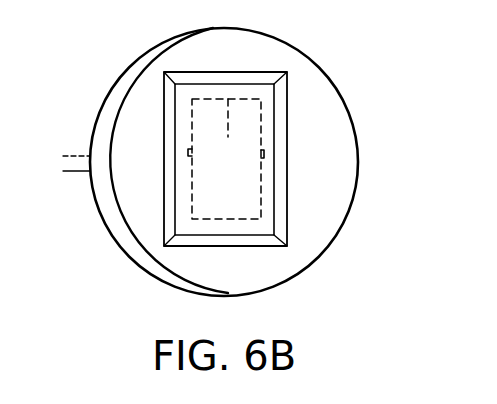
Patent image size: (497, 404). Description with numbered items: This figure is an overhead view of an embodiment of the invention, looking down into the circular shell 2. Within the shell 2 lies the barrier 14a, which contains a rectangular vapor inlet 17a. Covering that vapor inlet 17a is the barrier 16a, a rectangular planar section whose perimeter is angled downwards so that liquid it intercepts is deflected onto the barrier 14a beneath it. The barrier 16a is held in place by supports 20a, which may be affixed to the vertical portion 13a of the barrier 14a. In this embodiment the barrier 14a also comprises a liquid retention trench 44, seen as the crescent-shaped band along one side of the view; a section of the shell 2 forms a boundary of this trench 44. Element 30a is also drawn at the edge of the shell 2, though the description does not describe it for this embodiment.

The shell 2 is at (148, 52).
The liquid retention trench 44 is at (117, 110).
The barrier 14a is at (254, 272).
The vertical portion 13a is at (202, 219).
The barrier 16a is at (253, 206).
The vapor inlet 17a is at (231, 96).
The supports 20a is at (264, 155).
The cable 30a is at (78, 162).